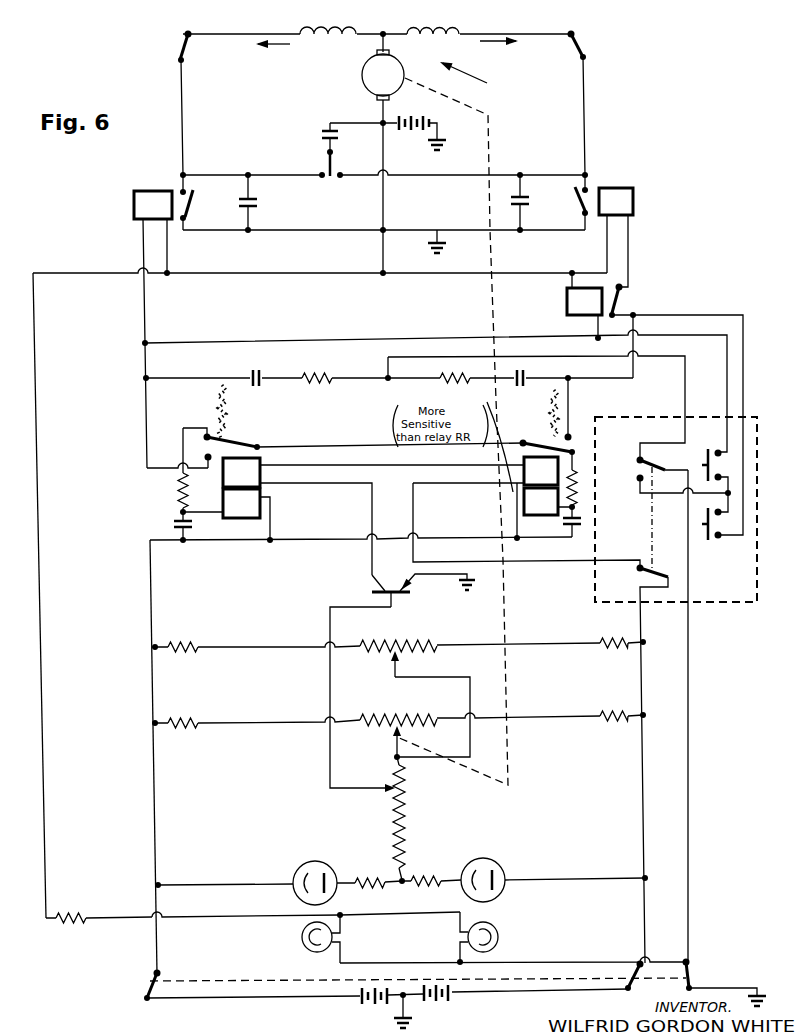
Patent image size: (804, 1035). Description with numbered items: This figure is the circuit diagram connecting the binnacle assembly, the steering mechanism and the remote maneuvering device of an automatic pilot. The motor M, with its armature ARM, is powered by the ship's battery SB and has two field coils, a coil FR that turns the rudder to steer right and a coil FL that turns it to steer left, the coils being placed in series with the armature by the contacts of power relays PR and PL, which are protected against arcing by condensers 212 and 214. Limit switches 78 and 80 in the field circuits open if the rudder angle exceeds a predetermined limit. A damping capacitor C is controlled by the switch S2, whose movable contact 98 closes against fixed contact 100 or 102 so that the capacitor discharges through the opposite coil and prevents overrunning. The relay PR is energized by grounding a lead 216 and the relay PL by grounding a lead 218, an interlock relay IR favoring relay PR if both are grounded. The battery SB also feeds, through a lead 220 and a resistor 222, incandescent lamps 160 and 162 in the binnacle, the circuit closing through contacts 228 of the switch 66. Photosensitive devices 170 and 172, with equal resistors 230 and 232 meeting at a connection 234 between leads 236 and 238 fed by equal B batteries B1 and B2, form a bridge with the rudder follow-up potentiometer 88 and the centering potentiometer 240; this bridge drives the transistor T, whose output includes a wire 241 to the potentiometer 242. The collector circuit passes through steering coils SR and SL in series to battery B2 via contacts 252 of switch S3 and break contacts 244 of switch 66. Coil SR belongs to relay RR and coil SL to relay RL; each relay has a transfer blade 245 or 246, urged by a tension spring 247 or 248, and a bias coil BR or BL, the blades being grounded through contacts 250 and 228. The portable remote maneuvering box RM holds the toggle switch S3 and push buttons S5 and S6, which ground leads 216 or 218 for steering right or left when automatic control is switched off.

The limit switch 78 is at (179, 47).
The limit switch 80 is at (586, 41).
The field coil FR is at (328, 20).
The field coil FL is at (433, 20).
The armature ARM is at (383, 67).
The motor M is at (475, 81).
The damping capacitor C is at (322, 126).
The ship's battery SB is at (420, 137).
The movable contact 98 is at (336, 166).
The fixed contact 100 is at (342, 173).
The fixed contact 102 is at (320, 173).
The switch S2 is at (490, 207).
The condenser 212 is at (261, 215).
The condenser 214 is at (513, 187).
The power relay PR is at (163, 321).
The power relay PL is at (604, 231).
The interlock relay IR is at (595, 305).
The lead 216 is at (144, 378).
The lead 218 is at (636, 369).
The lead 220 is at (46, 581).
The resistor 222 is at (68, 912).
The tension spring 247 is at (216, 405).
The tension spring 248 is at (548, 406).
The transfer blade 245 is at (244, 443).
The transfer blade 246 is at (541, 441).
The relay RR is at (273, 493).
The relay RL is at (503, 492).
The steering coil SR is at (241, 472).
The bias coil BR is at (248, 516).
The steering coil SL is at (541, 471).
The bias coil BL is at (541, 501).
The transistor T is at (423, 596).
The wire 241 is at (328, 688).
The lead 236 is at (160, 812).
The lead 238 is at (643, 804).
The centering potentiometer 240 is at (392, 640).
The rudder follow-up potentiometer 88 is at (405, 715).
The potentiometer 242 is at (407, 812).
The photosensitive device 170 is at (300, 865).
The photosensitive device 172 is at (497, 863).
The resistor 230 is at (376, 862).
The resistor 232 is at (418, 873).
The connection 234 is at (404, 884).
The incandescent lamp 160 is at (302, 937).
The incandescent lamp 162 is at (497, 938).
The switch 66 is at (245, 978).
The break contacts 244 is at (630, 962).
The contacts 228 is at (707, 975).
The B battery B1 is at (374, 1007).
The B battery B2 is at (436, 1005).
The remote maneuvering control box RM is at (740, 602).
The break contacts 250 is at (636, 463).
The contacts 252 is at (636, 579).
The toggle switch S3 is at (650, 523).
The push-button switch S5 is at (722, 471).
The push-button switch S6 is at (722, 516).